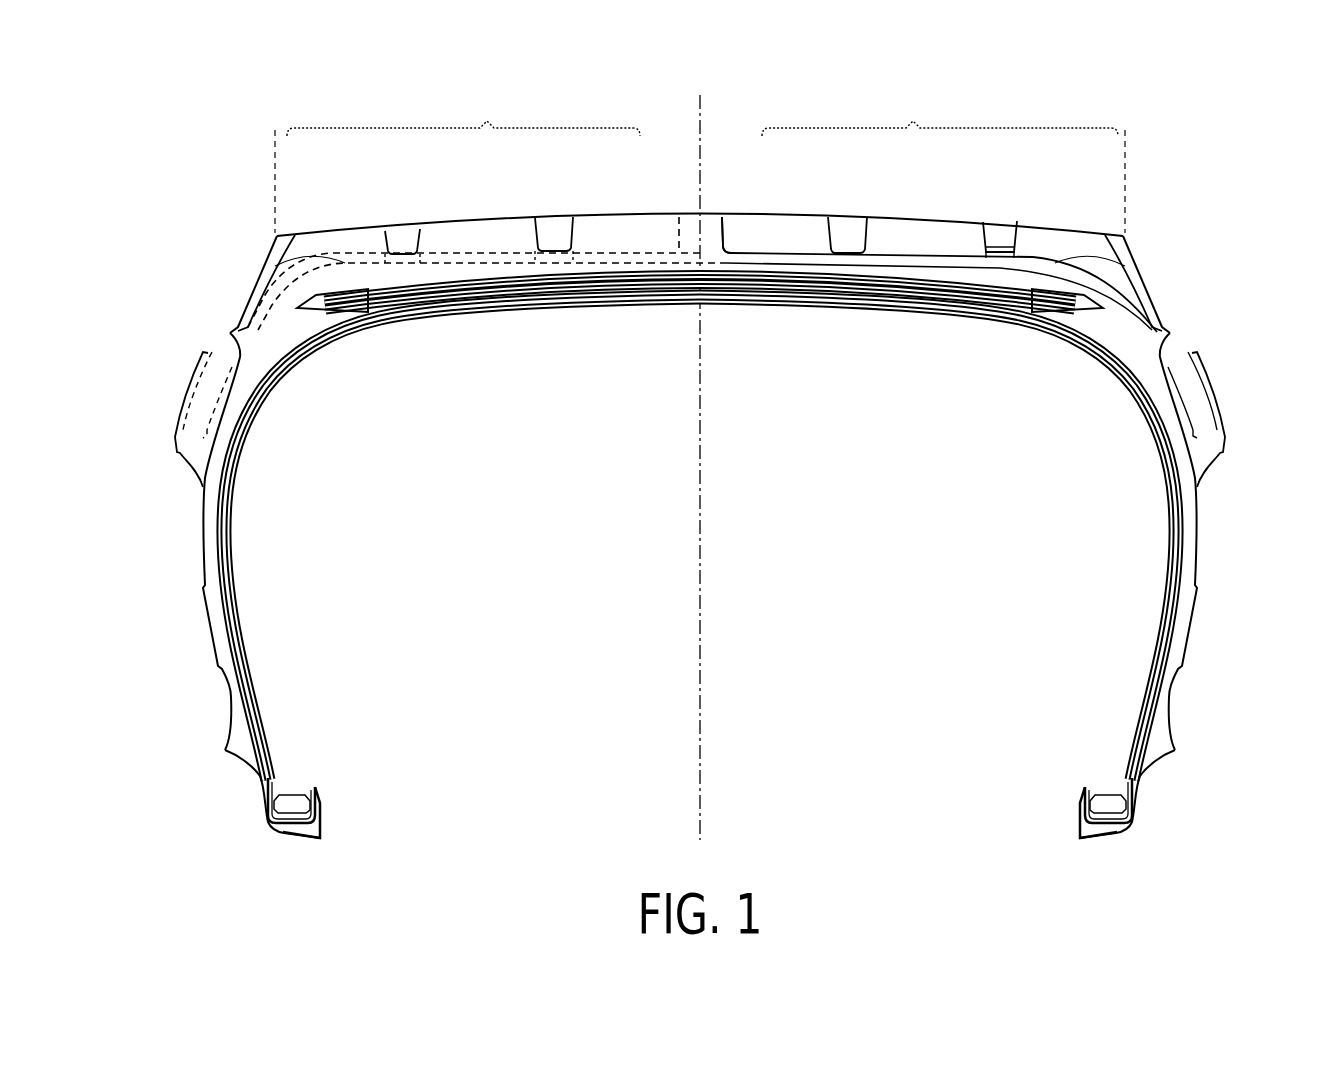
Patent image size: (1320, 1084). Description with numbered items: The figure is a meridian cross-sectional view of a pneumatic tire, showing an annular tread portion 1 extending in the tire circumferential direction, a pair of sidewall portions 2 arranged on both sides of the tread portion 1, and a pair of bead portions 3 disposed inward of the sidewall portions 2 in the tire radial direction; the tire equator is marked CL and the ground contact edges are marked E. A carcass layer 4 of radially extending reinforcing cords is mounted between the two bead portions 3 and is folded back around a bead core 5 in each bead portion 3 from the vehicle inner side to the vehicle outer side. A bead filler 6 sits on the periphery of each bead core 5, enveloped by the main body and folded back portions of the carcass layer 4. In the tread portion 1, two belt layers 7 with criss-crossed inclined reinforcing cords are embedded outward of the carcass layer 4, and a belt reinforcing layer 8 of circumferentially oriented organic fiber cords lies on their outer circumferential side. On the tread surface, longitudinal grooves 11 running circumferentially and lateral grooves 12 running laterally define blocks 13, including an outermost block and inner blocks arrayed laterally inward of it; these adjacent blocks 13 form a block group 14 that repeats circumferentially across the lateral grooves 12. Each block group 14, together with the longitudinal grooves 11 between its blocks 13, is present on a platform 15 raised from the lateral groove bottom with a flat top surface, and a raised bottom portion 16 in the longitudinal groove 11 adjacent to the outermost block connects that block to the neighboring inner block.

The tread portion 1 is at (718, 174).
The sidewall portion 2 is at (1215, 521).
The bead portion 3 is at (1153, 806).
The carcass layer 4 is at (1143, 402).
The bead core 5 is at (1100, 810).
The bead filler 6 is at (1107, 765).
The belt layer 7 is at (870, 284).
The belt reinforcing layer 8 is at (1050, 288).
The longitudinal groove 11 is at (997, 233).
The lateral groove 12 is at (772, 262).
The block 13 is at (1080, 234).
The block group 14 is at (702, 113).
The platform 15 is at (1132, 267).
The raised bottom portion 16 is at (1002, 260).